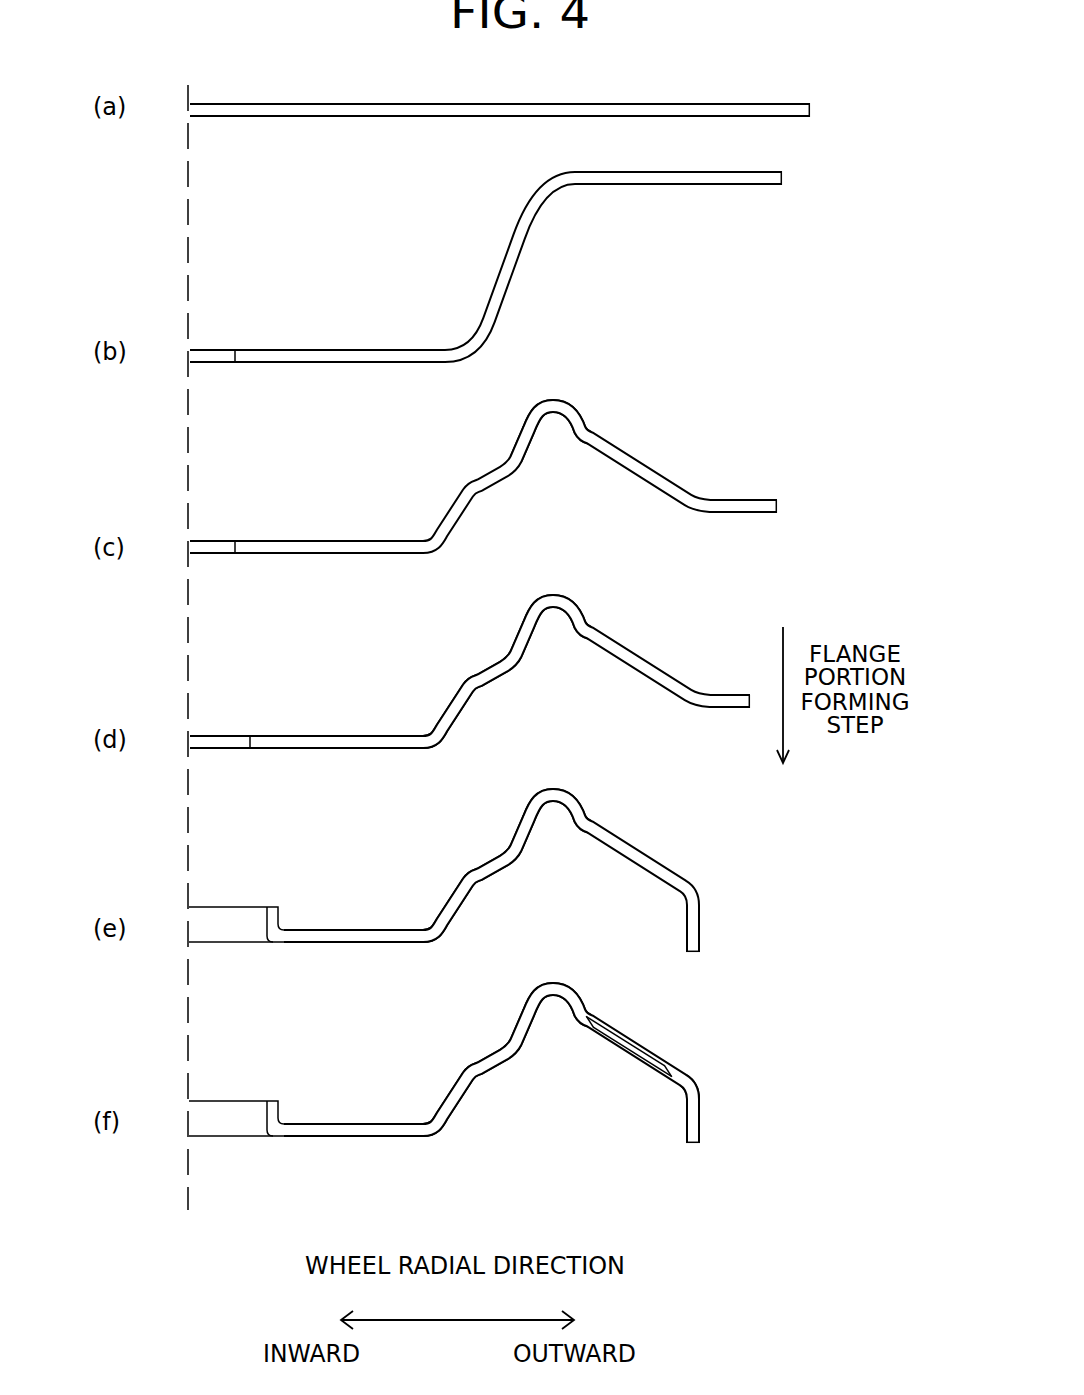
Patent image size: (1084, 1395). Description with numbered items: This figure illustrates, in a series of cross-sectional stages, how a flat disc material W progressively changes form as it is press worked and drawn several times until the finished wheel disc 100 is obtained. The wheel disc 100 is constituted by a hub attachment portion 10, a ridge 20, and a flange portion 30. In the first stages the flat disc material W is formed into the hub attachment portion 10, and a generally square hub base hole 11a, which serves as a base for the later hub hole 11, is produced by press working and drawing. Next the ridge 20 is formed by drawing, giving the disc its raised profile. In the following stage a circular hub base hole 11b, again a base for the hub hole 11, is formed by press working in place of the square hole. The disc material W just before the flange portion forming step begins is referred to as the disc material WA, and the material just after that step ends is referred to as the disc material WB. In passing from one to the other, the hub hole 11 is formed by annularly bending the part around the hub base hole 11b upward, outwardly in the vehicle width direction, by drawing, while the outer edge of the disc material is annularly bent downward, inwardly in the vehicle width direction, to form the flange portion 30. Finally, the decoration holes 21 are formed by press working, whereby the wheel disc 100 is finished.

The disc material W is at (747, 103).
The disc material WA is at (670, 633).
The disc material WB is at (670, 830).
The hub attachment portion 10 is at (310, 350).
The hub hole 11 is at (226, 930).
The hub base hole 11a is at (210, 350).
The hub base hole 11b is at (215, 736).
The ridge 20 is at (560, 400).
The decoration holes 21 is at (633, 1043).
The flange portion 30 is at (700, 1113).
The wheel disc 100 is at (705, 1041).